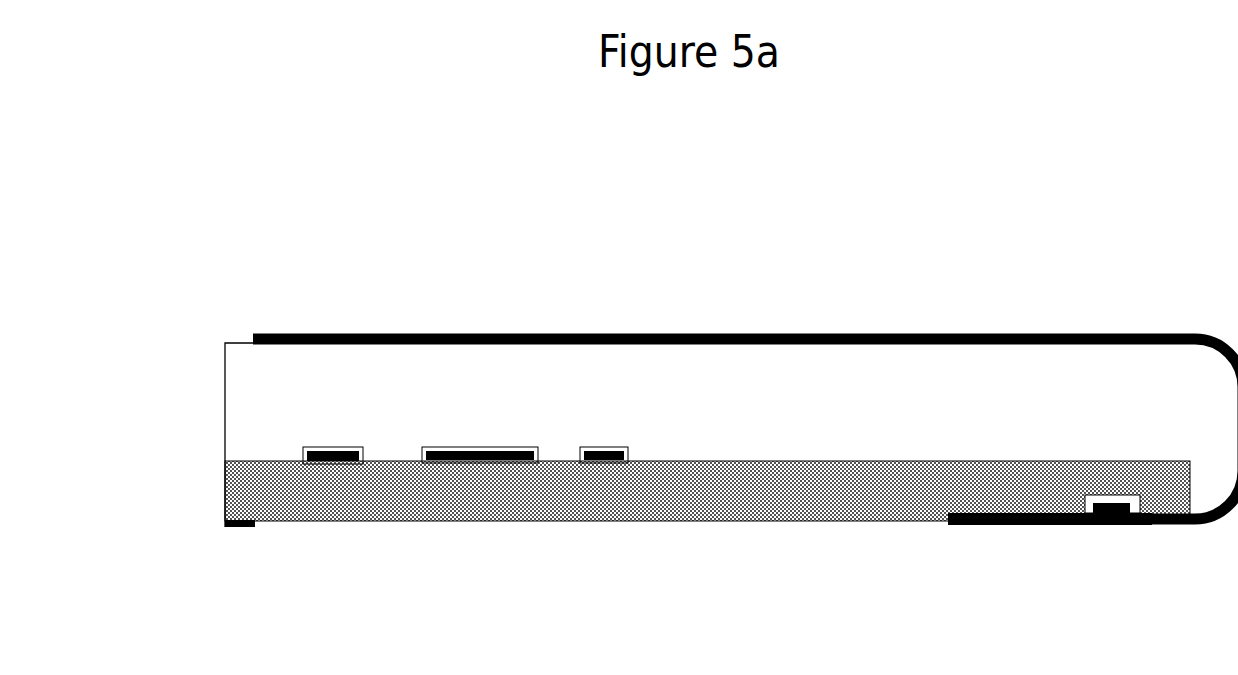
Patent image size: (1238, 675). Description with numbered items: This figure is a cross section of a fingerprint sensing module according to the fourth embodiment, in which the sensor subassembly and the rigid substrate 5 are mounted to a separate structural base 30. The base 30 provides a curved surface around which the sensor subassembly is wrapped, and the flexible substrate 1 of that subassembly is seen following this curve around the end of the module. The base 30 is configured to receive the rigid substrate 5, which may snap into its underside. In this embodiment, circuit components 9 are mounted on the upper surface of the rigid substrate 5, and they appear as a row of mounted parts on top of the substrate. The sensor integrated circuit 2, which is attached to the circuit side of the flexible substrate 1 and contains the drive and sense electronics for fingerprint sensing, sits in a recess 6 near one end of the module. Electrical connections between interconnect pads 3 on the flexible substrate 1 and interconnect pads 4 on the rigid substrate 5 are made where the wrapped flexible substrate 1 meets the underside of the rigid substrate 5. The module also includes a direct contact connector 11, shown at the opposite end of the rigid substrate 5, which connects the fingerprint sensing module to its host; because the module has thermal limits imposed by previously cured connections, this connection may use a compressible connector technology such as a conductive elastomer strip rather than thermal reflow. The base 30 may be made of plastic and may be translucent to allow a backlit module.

The flexible substrate 1 is at (250, 333).
The sensor integrated circuit 2 is at (1113, 498).
The interconnect pads on flexible substrate 3 is at (1050, 469).
The interconnect pads on rigid substrate 4 is at (950, 516).
The rigid substrate 5 is at (866, 459).
The recess 6 is at (1085, 497).
The circuit components 9 is at (335, 446).
The direct contact connector 11 is at (239, 530).
The structural base 30 is at (225, 412).